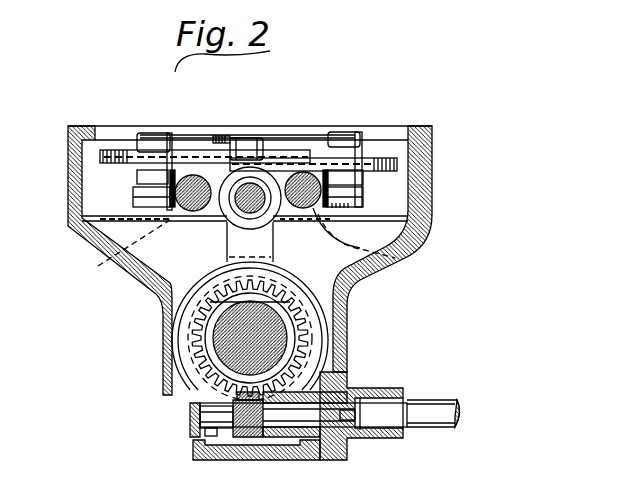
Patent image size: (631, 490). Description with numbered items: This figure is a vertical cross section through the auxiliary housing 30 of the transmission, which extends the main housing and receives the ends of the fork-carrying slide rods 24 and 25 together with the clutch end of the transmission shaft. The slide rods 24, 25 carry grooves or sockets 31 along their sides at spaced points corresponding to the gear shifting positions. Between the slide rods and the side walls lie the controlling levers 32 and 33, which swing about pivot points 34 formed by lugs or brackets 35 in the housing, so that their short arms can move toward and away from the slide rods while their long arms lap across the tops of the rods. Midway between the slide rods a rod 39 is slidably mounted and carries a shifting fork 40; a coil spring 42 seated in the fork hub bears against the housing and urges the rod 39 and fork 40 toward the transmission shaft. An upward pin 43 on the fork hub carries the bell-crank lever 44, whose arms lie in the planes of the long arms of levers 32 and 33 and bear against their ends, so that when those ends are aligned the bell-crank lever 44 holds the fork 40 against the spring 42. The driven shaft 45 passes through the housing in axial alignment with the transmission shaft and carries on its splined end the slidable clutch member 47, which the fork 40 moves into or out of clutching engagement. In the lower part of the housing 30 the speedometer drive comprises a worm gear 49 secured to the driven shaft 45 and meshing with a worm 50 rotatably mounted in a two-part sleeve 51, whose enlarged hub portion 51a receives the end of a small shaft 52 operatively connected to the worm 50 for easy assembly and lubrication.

The slide rod 24 is at (360, 248).
The slide rod 25 is at (188, 210).
The auxiliary housing 30 is at (355, 272).
The grooves or sockets 31 is at (121, 251).
The controlling lever 32 is at (294, 152).
The controlling lever 33 is at (178, 149).
The pivot point 34 is at (146, 133).
The lug or bracket 35 is at (93, 204).
The rod 39 is at (240, 213).
The shifting fork 40 is at (183, 290).
The coil spring 42 is at (233, 205).
The lug or pin 43 is at (241, 137).
The bell-crank lever 44 is at (270, 150).
The driven shaft 45 is at (283, 334).
The clutch member 47 is at (315, 355).
The worm gear 49 is at (190, 350).
The worm 50 is at (232, 438).
The two-part sleeve 51 is at (287, 430).
The enlarged end or hub portion 51a is at (392, 387).
The small shaft 52 is at (458, 410).